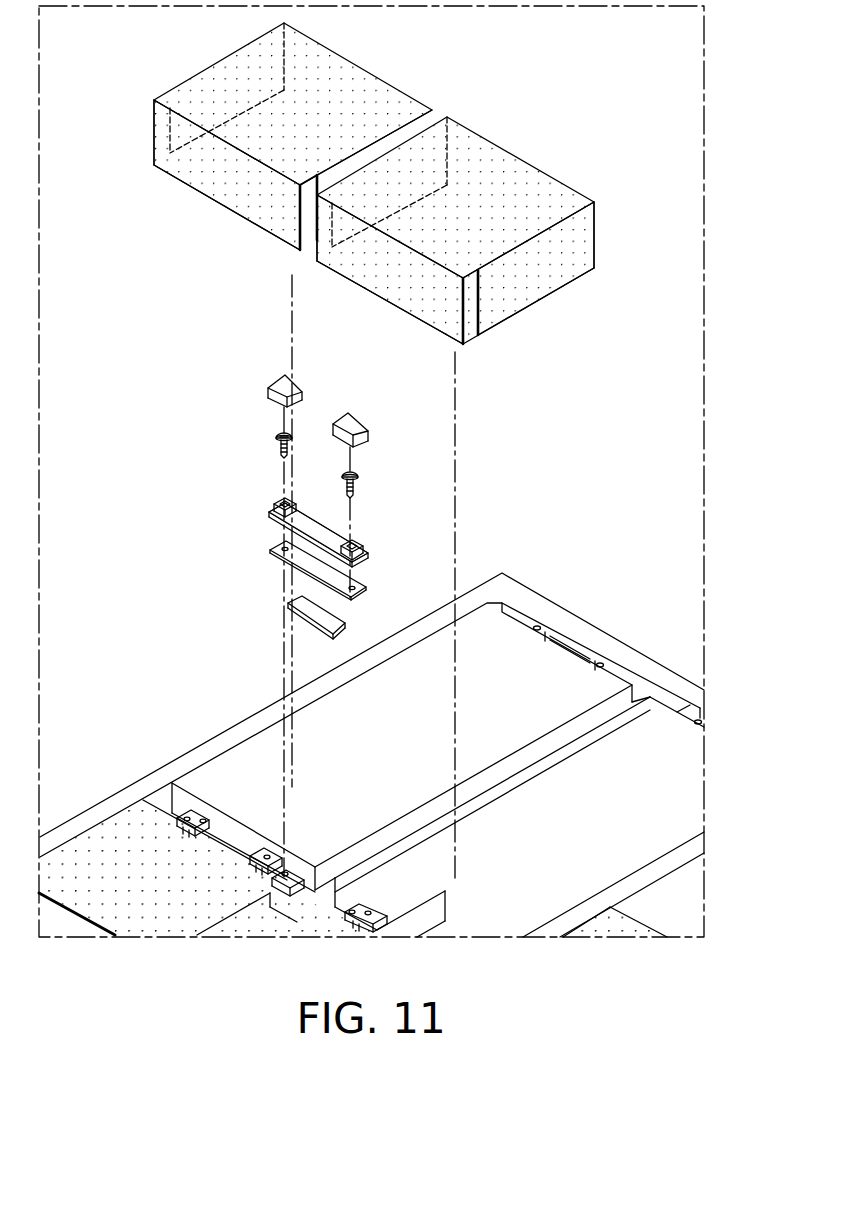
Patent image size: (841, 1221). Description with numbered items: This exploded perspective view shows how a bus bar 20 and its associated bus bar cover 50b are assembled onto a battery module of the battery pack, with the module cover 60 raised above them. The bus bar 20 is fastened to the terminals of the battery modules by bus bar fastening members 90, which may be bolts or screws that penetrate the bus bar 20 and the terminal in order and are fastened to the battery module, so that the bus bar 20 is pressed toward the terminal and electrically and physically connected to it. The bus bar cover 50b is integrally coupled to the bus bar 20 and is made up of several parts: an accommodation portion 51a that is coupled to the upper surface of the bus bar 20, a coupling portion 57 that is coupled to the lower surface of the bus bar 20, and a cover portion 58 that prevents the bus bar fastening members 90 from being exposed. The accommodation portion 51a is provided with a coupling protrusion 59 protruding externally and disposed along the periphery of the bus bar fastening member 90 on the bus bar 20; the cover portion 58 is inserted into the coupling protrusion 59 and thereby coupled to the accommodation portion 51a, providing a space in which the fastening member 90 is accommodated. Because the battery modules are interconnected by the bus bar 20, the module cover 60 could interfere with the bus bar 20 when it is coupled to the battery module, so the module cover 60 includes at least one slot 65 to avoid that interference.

The module cover 60 is at (420, 73).
The slot 65 is at (306, 218).
The bus bar fastening member 90 is at (279, 453).
The cover portion 58 is at (357, 438).
The accommodation portion 51a is at (362, 555).
The bus bar cover 50b is at (435, 507).
The coupling portion 57 is at (337, 624).
The coupling protrusion 59 is at (282, 513).
The bus bar 20 is at (306, 560).